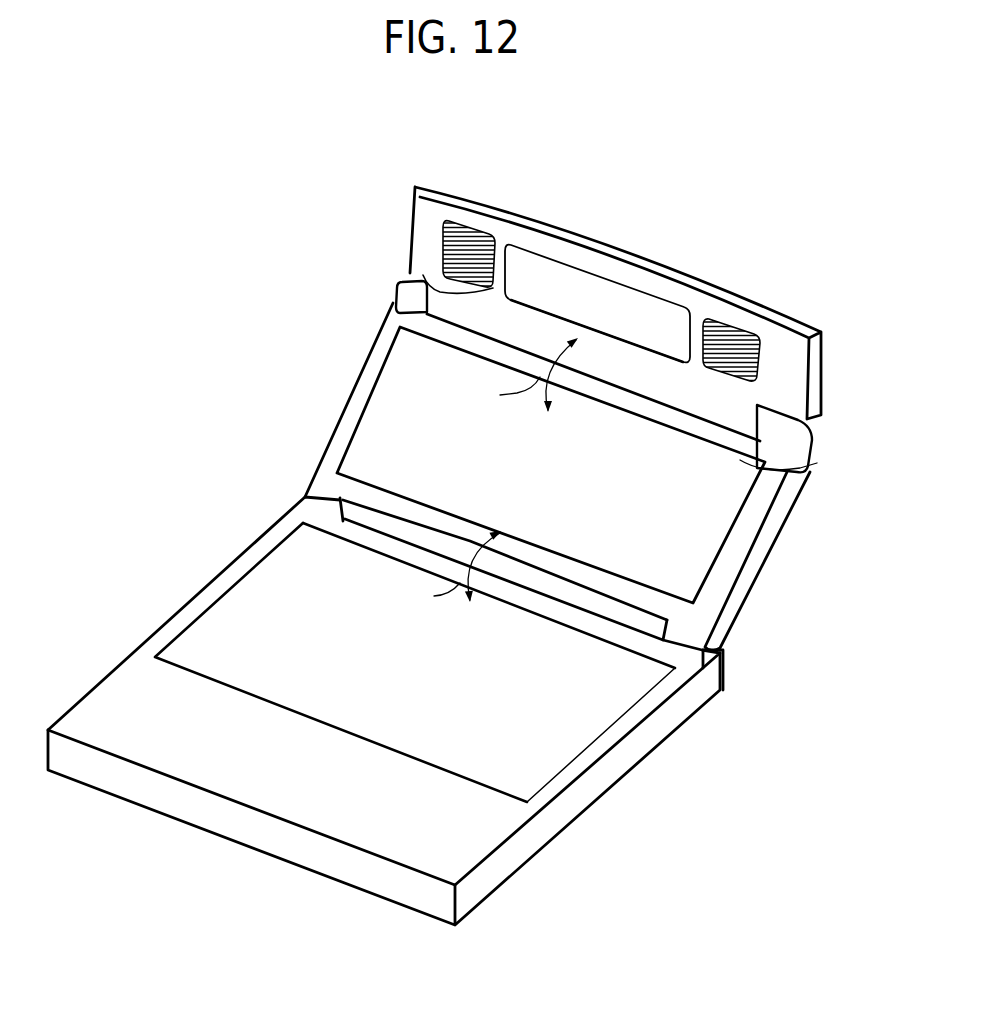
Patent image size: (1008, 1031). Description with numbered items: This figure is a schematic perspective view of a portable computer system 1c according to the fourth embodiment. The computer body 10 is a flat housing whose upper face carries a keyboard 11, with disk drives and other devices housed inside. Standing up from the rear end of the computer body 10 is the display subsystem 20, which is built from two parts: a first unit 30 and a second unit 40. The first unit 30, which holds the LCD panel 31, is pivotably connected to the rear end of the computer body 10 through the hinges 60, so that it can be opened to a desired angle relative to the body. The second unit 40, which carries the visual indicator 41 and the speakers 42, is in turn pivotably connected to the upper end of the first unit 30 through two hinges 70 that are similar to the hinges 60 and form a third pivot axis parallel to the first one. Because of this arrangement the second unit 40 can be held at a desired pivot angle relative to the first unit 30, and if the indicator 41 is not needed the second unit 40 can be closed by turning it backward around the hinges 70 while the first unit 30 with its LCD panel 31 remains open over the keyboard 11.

The portable electronic apparatus 1c is at (457, 530).
The computer body 10 is at (558, 811).
The keyboard 11 is at (547, 752).
The display subsystem 20 is at (323, 136).
The first unit 30 is at (536, 476).
The LCD panel 31 is at (403, 368).
The second unit 40 is at (593, 287).
The visual indicator 41 is at (518, 272).
The speakers 42 is at (443, 249).
The hinges 60 is at (334, 508).
The hinges 70 is at (418, 307).